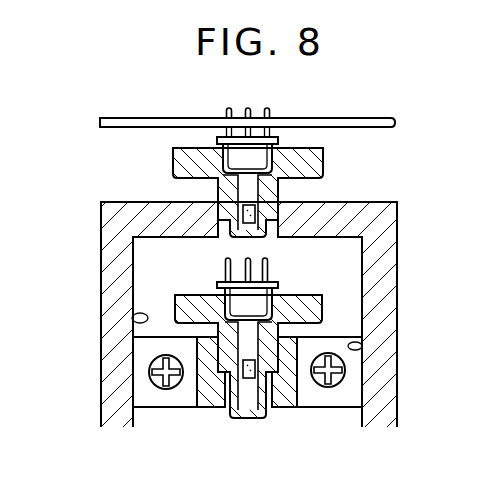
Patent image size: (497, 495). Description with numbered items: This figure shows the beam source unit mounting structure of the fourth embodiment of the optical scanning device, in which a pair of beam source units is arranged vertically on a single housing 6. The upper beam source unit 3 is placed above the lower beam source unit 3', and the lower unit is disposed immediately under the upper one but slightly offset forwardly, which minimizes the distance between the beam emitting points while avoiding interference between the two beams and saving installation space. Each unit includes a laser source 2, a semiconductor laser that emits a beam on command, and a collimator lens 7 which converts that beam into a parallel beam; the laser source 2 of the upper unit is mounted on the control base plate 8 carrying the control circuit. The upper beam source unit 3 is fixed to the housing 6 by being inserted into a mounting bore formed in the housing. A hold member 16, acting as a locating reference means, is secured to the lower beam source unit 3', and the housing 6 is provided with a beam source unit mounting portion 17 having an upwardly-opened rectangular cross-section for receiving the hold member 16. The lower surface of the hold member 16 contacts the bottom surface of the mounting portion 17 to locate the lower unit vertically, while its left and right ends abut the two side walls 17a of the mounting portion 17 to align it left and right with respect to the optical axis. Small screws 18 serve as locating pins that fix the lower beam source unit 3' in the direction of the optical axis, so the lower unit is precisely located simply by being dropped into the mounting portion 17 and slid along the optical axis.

The control base plate 8 is at (395, 123).
The upper beam source unit 3 is at (204, 192).
The lower beam source unit 3' is at (248, 386).
The laser source 2 is at (265, 158).
The collimator lens 7 is at (255, 216).
The housing 6 is at (107, 283).
The beam source unit mounting portion 17 is at (145, 417).
The side wall 17a is at (136, 315).
The hold member 16 is at (350, 394).
The small screw 18 is at (150, 385).